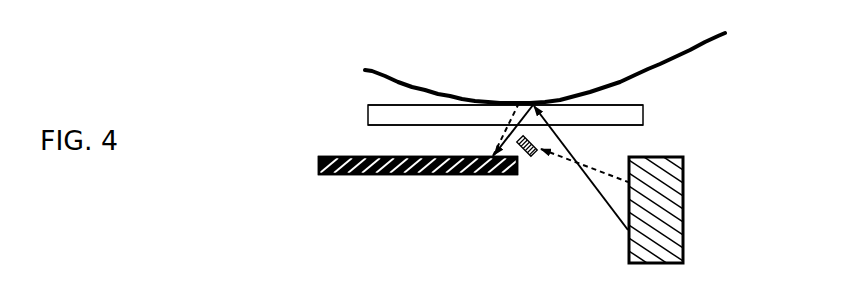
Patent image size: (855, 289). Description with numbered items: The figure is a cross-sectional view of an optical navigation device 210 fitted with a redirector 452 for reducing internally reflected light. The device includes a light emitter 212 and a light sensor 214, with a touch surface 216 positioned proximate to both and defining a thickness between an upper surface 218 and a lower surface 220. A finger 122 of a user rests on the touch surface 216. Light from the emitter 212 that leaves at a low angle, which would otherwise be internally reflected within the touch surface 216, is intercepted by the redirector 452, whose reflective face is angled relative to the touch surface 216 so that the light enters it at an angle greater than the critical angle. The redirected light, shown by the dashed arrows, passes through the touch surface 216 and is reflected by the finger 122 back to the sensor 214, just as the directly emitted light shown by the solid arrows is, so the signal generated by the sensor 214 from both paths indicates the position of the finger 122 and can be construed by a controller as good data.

The finger 122 is at (558, 70).
The touch surface 216 is at (366, 113).
The upper surface 218 is at (628, 105).
The lower surface 220 is at (607, 126).
The light emitter 212 is at (668, 213).
The light sensor 214 is at (433, 168).
The optical navigation device 210 is at (312, 197).
The redirector 452 is at (537, 175).